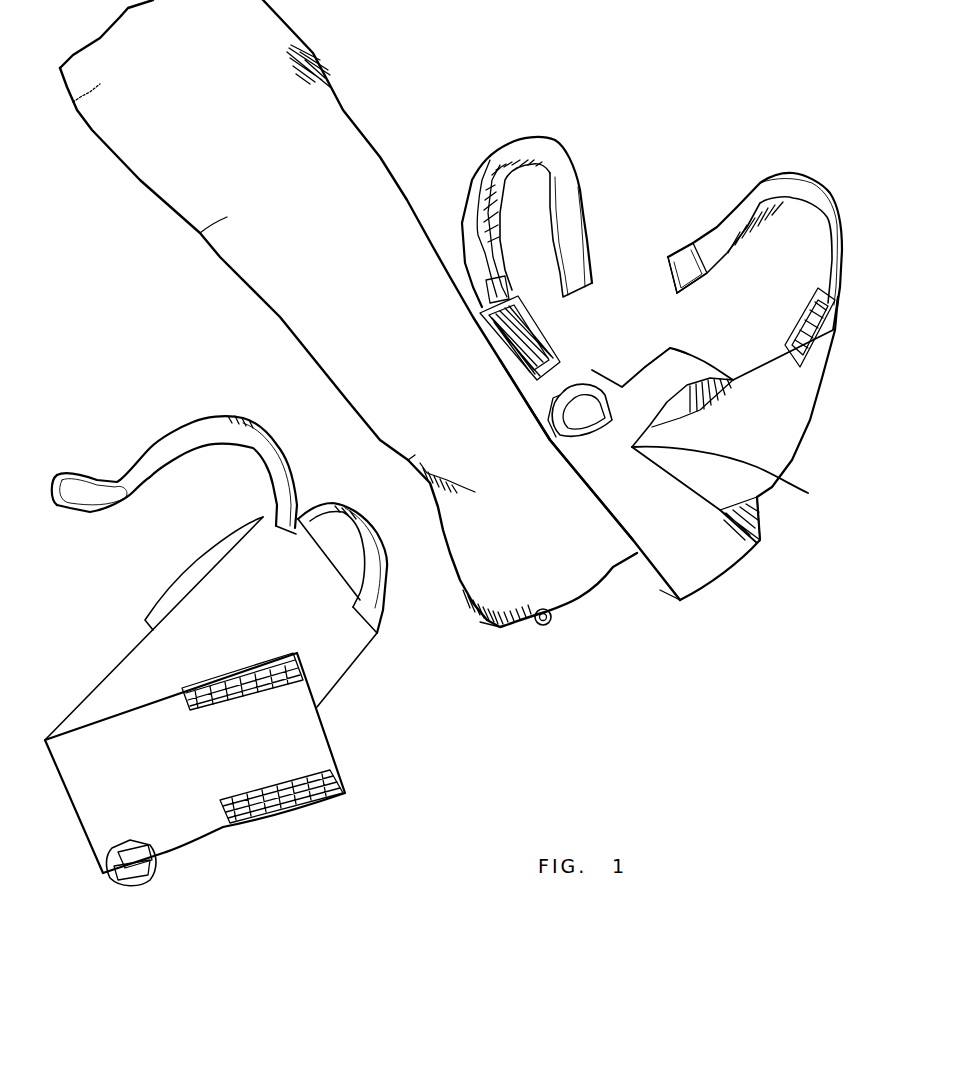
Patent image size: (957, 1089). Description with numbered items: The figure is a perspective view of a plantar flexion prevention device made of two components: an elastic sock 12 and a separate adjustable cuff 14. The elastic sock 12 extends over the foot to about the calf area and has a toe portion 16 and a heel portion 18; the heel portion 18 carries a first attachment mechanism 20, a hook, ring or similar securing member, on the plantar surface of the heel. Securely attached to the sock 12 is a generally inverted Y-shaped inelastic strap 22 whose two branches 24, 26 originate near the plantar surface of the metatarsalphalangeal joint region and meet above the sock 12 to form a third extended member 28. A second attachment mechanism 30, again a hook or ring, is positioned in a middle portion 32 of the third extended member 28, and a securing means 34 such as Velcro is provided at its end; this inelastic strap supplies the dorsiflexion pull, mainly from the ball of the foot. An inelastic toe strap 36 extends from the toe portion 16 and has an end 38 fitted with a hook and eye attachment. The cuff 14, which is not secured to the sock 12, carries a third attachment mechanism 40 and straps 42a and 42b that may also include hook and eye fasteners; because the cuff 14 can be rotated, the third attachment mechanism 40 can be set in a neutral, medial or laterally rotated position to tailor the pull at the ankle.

The elastic sock 12 is at (152, 187).
The cuff 14 is at (147, 647).
The toe portion 16 is at (823, 383).
The heel portion 18 is at (490, 630).
The first attachment mechanism 20 is at (548, 622).
The inverted Y-shaped inelastic strap 22 is at (735, 481).
The branch 24 is at (670, 590).
The branch 26 is at (693, 360).
The third extended member 28 is at (537, 136).
The second attachment mechanism 30 is at (580, 383).
The middle portion 32 is at (550, 440).
The securing means 34 is at (588, 270).
The inelastic toe strap 36 is at (805, 173).
The end 38 is at (682, 253).
The third attachment mechanism 40 is at (143, 873).
The strap 42a is at (150, 448).
The strap 42b is at (197, 558).